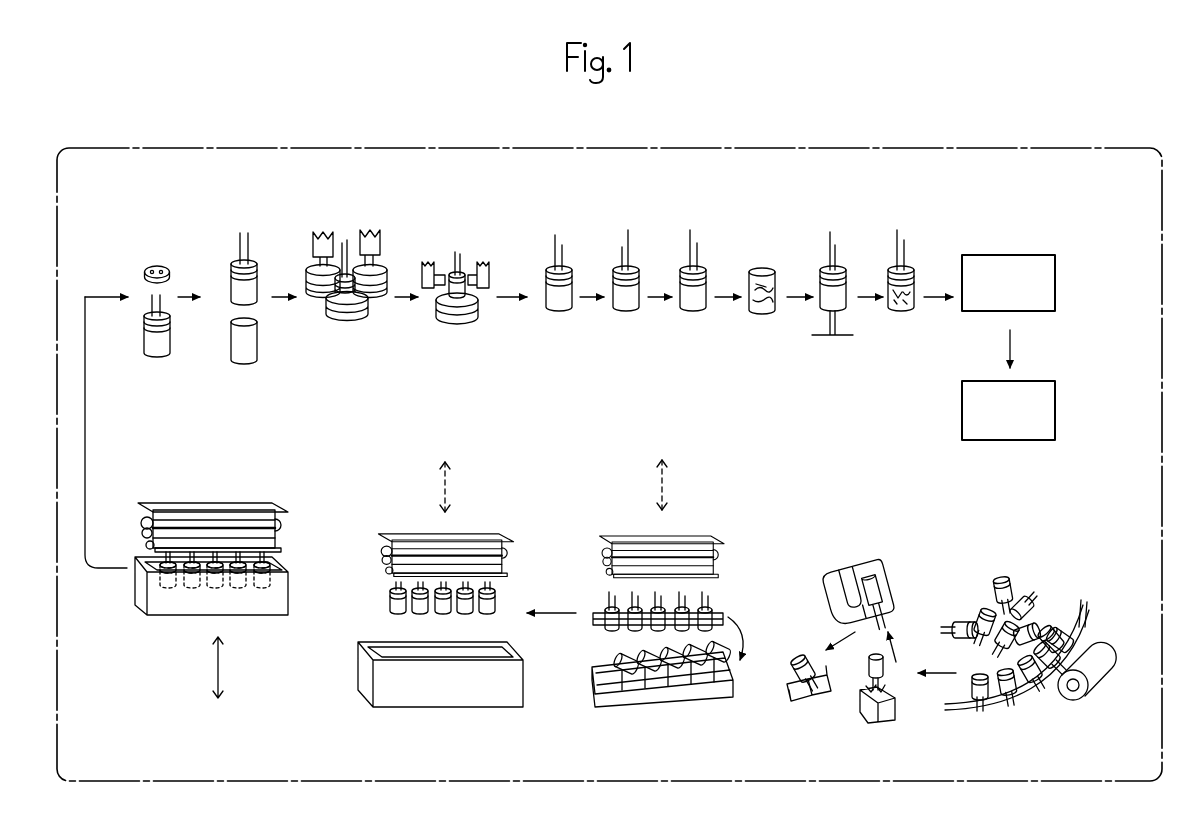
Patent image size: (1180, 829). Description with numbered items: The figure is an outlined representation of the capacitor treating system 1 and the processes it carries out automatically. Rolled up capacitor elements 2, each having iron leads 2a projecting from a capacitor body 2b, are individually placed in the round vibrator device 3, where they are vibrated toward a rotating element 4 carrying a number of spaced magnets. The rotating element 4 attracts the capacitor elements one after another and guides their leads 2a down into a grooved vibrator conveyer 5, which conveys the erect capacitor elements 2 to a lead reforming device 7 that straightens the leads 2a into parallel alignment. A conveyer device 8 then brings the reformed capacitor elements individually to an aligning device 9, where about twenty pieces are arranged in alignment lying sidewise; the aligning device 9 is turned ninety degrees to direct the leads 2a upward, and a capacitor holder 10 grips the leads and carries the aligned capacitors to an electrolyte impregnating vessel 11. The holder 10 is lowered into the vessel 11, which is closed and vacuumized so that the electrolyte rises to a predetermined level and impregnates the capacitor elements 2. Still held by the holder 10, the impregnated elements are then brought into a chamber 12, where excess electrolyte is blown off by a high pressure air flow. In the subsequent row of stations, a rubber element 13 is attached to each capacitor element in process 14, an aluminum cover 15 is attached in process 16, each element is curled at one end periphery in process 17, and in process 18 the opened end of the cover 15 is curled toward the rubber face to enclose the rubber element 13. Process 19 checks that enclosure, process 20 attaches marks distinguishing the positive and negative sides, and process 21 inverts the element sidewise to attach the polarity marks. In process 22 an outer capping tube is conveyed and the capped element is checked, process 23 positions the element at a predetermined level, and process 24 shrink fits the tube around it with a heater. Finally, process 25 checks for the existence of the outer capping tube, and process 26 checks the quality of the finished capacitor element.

The capacitor manufacturing system 1 is at (266, 146).
The capacitor element 2 is at (171, 352).
The iron leads 2a is at (161, 302).
The capacitor body 2b is at (175, 340).
The round vibrator device 3 is at (1088, 625).
The rotating element 4 is at (1096, 690).
The grooved vibrator conveyer 5 is at (1026, 702).
The lead reforming device 7 is at (866, 720).
The conveyer device 8 is at (817, 668).
The aligning device 9 is at (738, 683).
The capacitor holder 10 is at (288, 522).
The electrolyte impregnating vessel 11 is at (530, 670).
The chamber 12 is at (292, 606).
The rubber element 13 is at (153, 260).
The process 14 is at (134, 250).
The aluminum cover 15 is at (259, 358).
The process 16 is at (238, 250).
The process 17 is at (322, 250).
The process 18 is at (431, 250).
The process 19 is at (556, 250).
The process 20 is at (637, 210).
The process 21 is at (687, 238).
The process 22 is at (758, 252).
The process 23 is at (829, 250).
The process 24 is at (892, 248).
The process 25 is at (1003, 253).
The process 26 is at (1036, 375).